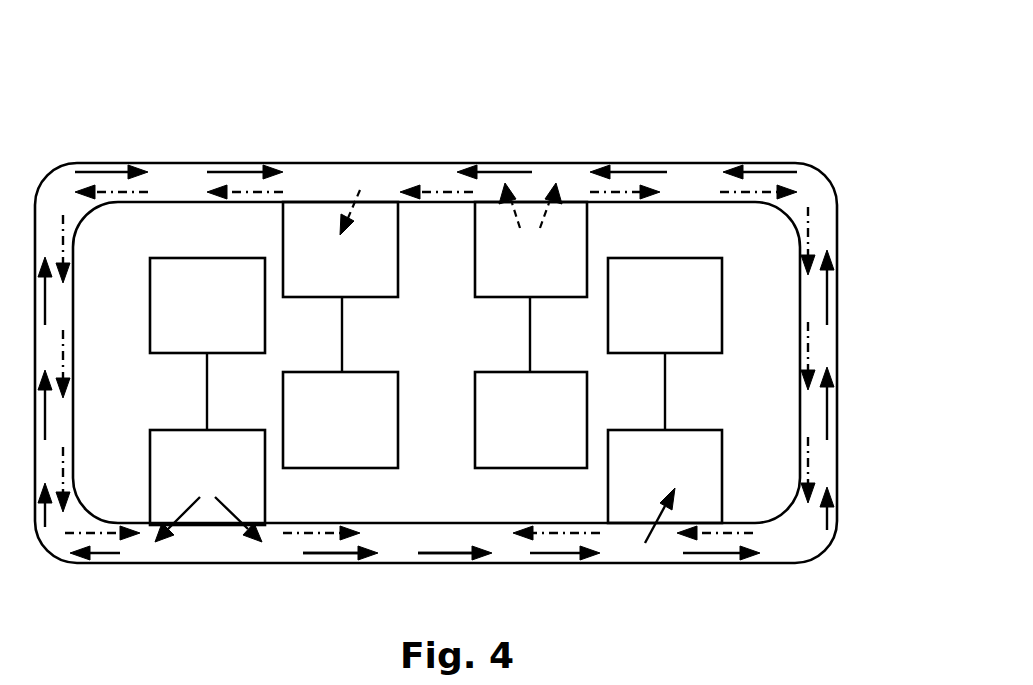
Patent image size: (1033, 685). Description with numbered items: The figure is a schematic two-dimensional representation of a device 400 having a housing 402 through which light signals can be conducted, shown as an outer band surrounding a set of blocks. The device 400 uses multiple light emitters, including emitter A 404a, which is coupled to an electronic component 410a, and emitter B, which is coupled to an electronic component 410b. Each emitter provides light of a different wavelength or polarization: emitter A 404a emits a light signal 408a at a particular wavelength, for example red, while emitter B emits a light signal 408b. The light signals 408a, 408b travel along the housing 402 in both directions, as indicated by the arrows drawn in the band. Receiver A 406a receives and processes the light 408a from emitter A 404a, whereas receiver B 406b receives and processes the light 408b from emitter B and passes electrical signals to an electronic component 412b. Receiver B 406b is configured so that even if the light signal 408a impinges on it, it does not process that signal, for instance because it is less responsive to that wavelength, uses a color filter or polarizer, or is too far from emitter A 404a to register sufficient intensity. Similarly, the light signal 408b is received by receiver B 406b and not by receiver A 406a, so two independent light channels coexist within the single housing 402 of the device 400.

The device 400 is at (703, 125).
The light guide channel 402 is at (670, 163).
The emitter A 404a is at (215, 525).
The receiver A 406a is at (600, 563).
The receiver B 406b is at (368, 202).
The light signal 408a is at (327, 553).
The light signal 408b is at (413, 199).
The electronic component 410a is at (190, 258).
The electronic component 410b is at (473, 455).
The electronic component 412b is at (378, 372).